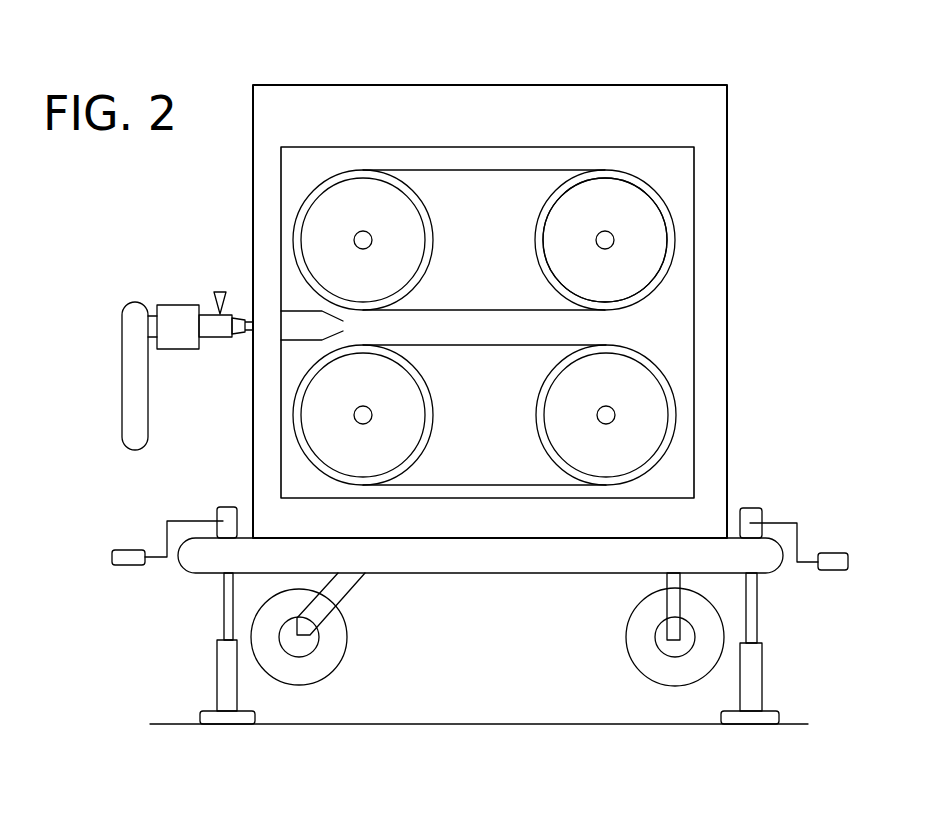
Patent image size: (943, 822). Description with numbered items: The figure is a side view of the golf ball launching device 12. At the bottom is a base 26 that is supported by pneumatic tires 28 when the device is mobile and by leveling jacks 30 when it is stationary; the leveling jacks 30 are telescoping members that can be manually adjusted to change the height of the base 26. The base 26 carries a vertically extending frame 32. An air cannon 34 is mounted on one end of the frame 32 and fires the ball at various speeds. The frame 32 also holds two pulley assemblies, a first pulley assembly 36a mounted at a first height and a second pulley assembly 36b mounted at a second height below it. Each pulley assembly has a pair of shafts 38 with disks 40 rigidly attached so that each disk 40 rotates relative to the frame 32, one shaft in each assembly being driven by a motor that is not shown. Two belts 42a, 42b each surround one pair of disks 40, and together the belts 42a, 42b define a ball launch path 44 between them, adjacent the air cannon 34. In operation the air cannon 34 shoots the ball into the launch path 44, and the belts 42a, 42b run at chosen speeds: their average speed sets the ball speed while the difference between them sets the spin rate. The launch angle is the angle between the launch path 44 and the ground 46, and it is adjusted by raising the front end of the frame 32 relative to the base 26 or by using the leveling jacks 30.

The launching device 12 is at (726, 68).
The base 26 is at (200, 565).
The pneumatic tires 28 is at (332, 660).
The leveling jacks 30 is at (212, 683).
The frame 32 is at (727, 130).
The air cannon 34 is at (186, 312).
The first pulley assembly 36a is at (360, 170).
The second pulley assembly 36b is at (294, 414).
The shafts 38 is at (617, 240).
The disks 40 is at (653, 228).
The first belt 42a is at (490, 168).
The second belt 42b is at (505, 485).
The ball launch path 44 is at (497, 328).
The ground 46 is at (489, 724).